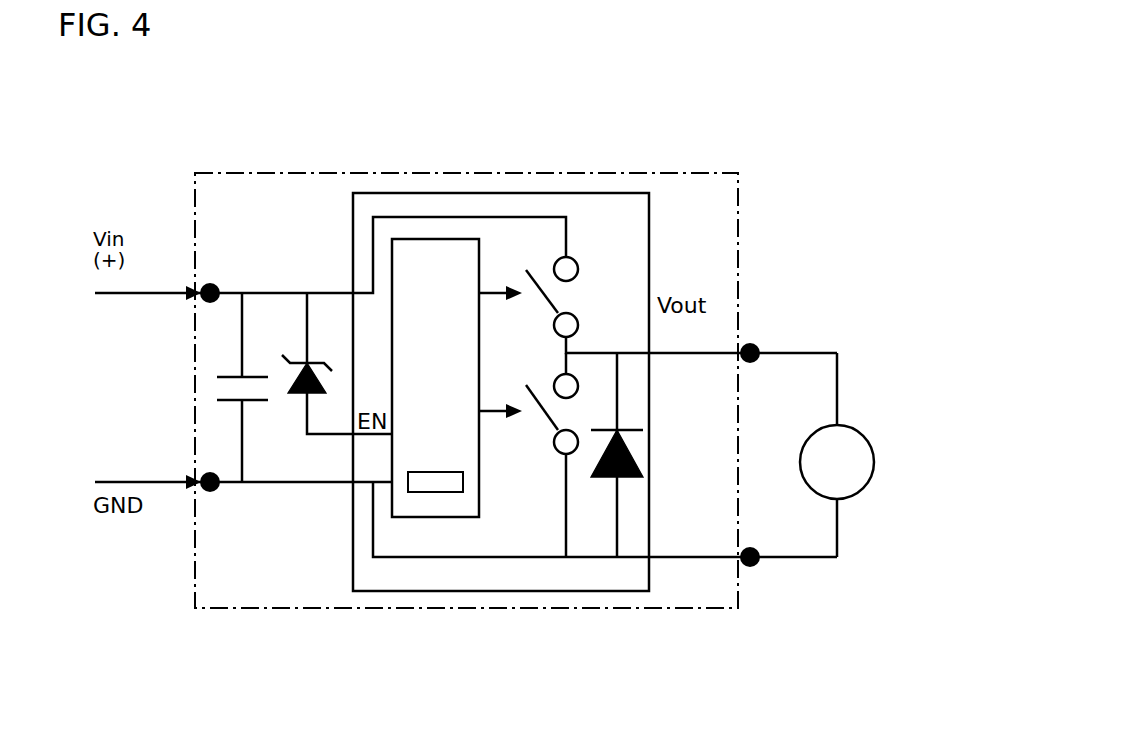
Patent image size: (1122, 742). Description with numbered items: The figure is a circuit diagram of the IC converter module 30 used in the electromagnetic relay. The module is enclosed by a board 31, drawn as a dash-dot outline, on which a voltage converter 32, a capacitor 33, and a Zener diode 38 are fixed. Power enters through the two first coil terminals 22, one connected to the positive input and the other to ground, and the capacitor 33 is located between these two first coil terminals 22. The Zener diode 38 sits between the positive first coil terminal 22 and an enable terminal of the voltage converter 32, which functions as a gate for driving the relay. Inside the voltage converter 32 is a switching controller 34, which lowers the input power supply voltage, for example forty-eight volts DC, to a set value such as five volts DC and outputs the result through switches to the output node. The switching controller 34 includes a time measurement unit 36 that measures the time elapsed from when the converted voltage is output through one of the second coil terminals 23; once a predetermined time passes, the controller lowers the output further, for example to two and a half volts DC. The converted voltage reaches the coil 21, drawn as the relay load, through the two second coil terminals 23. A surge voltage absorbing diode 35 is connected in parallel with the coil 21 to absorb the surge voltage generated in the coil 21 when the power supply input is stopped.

The coil 21 is at (863, 460).
The first coil terminals 22 is at (207, 287).
The second coil terminals 23 is at (753, 344).
The IC converter module 30 is at (491, 344).
The board 31 is at (730, 172).
The voltage converter 32 is at (492, 193).
The capacitor 33 is at (226, 375).
The switching controller 34 is at (418, 243).
The surge voltage absorbing diode 35 is at (637, 470).
The time measurement unit 36 is at (453, 482).
The Zener diode 38 is at (300, 395).